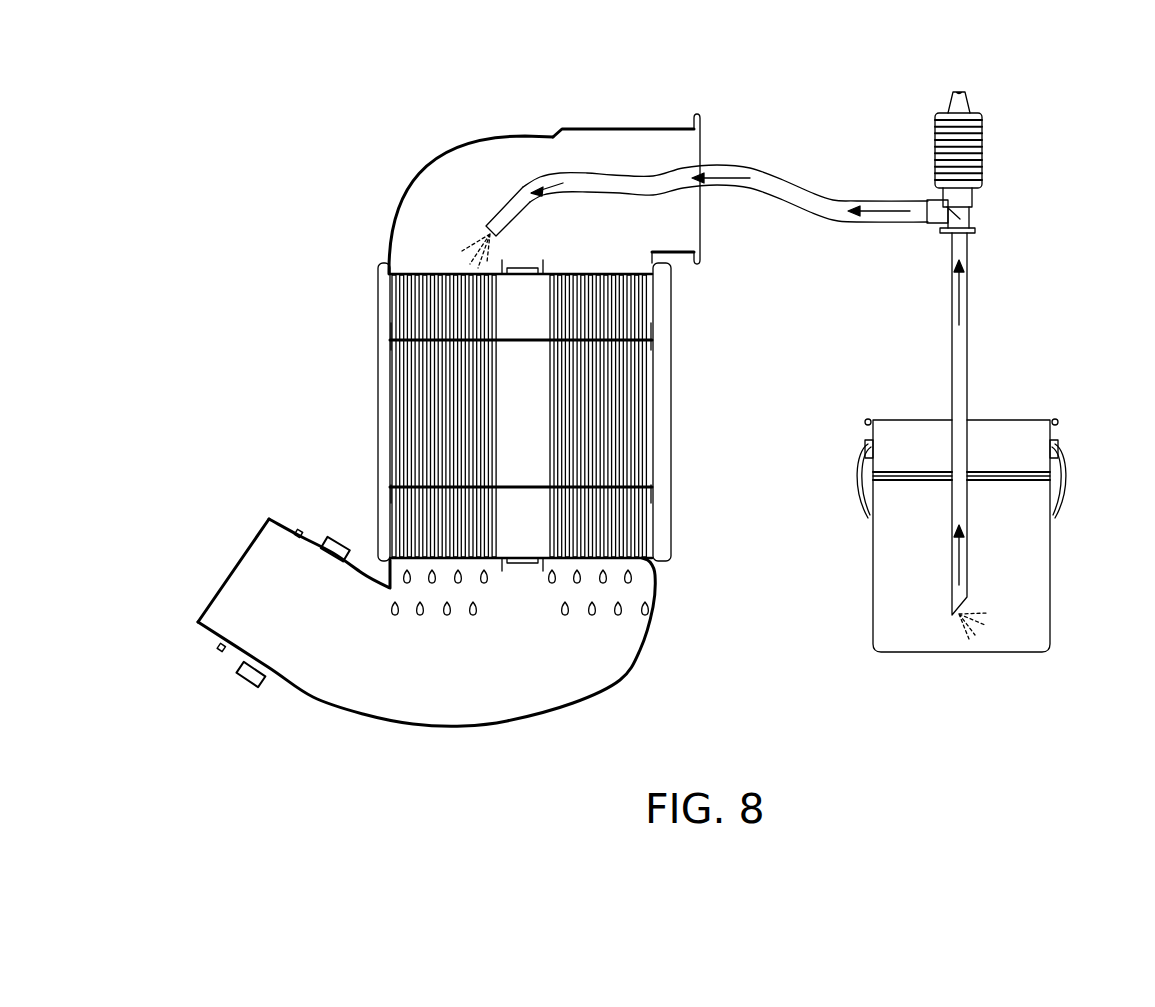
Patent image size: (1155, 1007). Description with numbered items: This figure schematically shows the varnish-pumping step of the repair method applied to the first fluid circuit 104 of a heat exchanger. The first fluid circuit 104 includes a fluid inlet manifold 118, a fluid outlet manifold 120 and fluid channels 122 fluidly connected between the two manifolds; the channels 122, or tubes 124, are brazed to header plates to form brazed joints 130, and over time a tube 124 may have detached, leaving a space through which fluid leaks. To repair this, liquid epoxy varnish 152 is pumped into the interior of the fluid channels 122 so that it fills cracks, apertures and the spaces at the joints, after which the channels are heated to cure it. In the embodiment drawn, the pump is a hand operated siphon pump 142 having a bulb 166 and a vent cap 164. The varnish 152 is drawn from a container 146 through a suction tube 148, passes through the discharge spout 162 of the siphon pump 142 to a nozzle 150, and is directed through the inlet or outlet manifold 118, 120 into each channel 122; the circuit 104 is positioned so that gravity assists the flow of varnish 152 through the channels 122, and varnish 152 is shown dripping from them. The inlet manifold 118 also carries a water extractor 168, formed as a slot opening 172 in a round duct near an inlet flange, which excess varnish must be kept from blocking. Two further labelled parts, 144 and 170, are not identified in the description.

The first fluid circuit 104 is at (470, 135).
The fluid inlet manifold 118 is at (632, 660).
The fluid outlet manifold 120 is at (424, 178).
The fluid channel 122 is at (648, 393).
The tube 124 is at (648, 443).
The brazed joint 130 is at (549, 392).
The hand operated siphon pump 142 is at (993, 134).
The pump outlet fitting 144 is at (985, 180).
The container 146 is at (1050, 575).
The suction tube 148 is at (968, 345).
The nozzle 150 is at (492, 220).
The epoxy varnish 152 is at (488, 250).
The discharge spout 162 is at (762, 169).
The vent cap 164 is at (958, 92).
The bulb 166 is at (985, 127).
The water extractor 168 is at (333, 543).
The tab 170 is at (222, 650).
The slot opening 172 is at (262, 660).